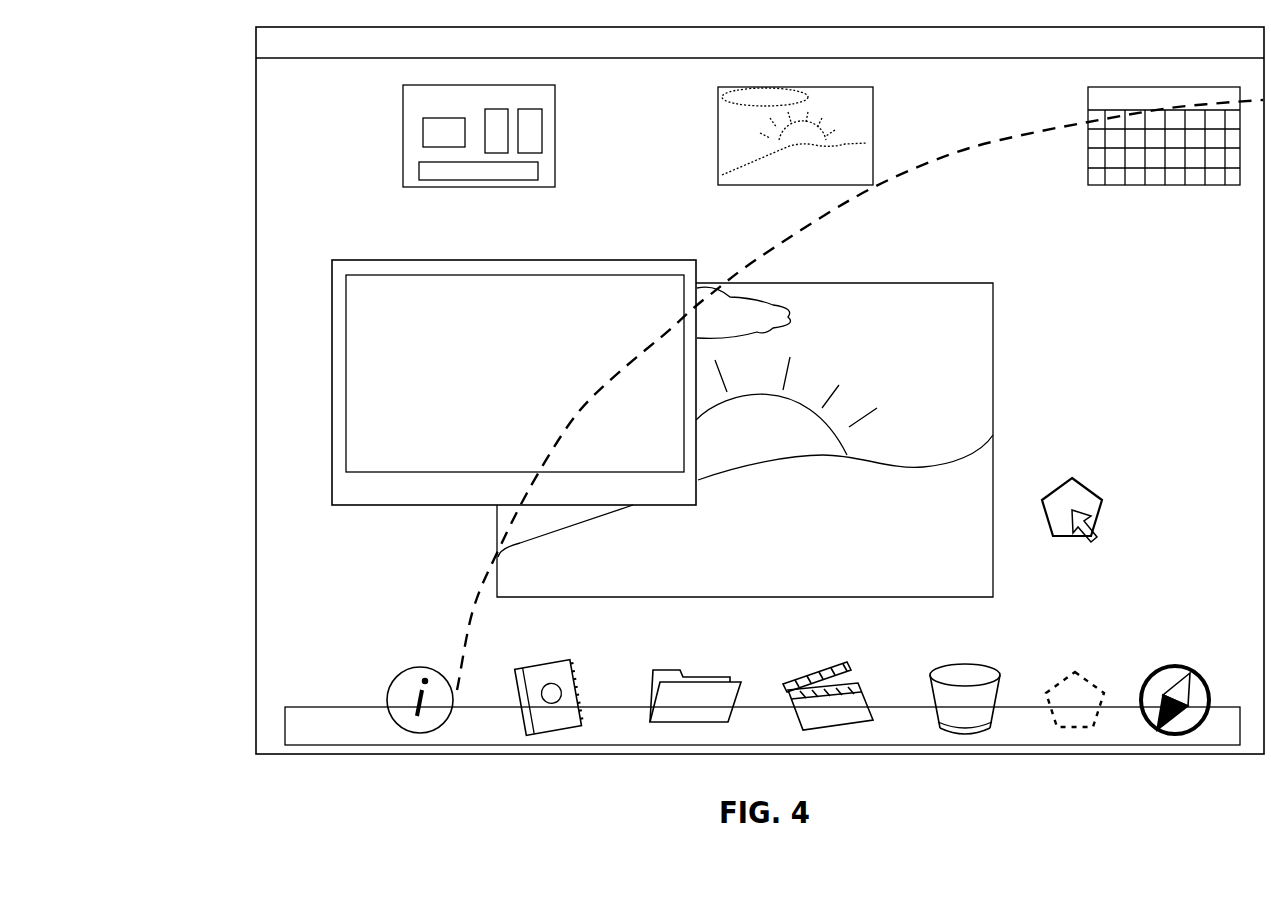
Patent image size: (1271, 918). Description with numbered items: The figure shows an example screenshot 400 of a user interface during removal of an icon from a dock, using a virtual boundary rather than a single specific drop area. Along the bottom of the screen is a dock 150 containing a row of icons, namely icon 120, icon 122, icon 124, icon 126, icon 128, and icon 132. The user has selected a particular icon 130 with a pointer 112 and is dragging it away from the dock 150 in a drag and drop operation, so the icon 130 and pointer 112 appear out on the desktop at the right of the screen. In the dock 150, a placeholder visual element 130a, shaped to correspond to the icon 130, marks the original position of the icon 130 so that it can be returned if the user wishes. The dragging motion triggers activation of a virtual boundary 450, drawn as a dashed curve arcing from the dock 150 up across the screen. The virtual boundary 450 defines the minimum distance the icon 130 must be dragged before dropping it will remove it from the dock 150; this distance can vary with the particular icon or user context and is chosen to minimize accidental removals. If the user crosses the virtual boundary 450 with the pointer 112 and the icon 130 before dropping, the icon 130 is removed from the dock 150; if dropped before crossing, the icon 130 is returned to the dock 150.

The screenshot 400 is at (212, 79).
The virtual boundary 450 is at (988, 162).
The dock 150 is at (285, 727).
The icon 120 is at (396, 679).
The icon 122 is at (528, 672).
The icon 124 is at (652, 682).
The icon 126 is at (796, 688).
The icon 128 is at (940, 672).
The placeholder visual element 130a is at (1073, 673).
The icon 132 is at (1208, 686).
The icon 130 is at (1068, 478).
The pointer 112 is at (1097, 540).